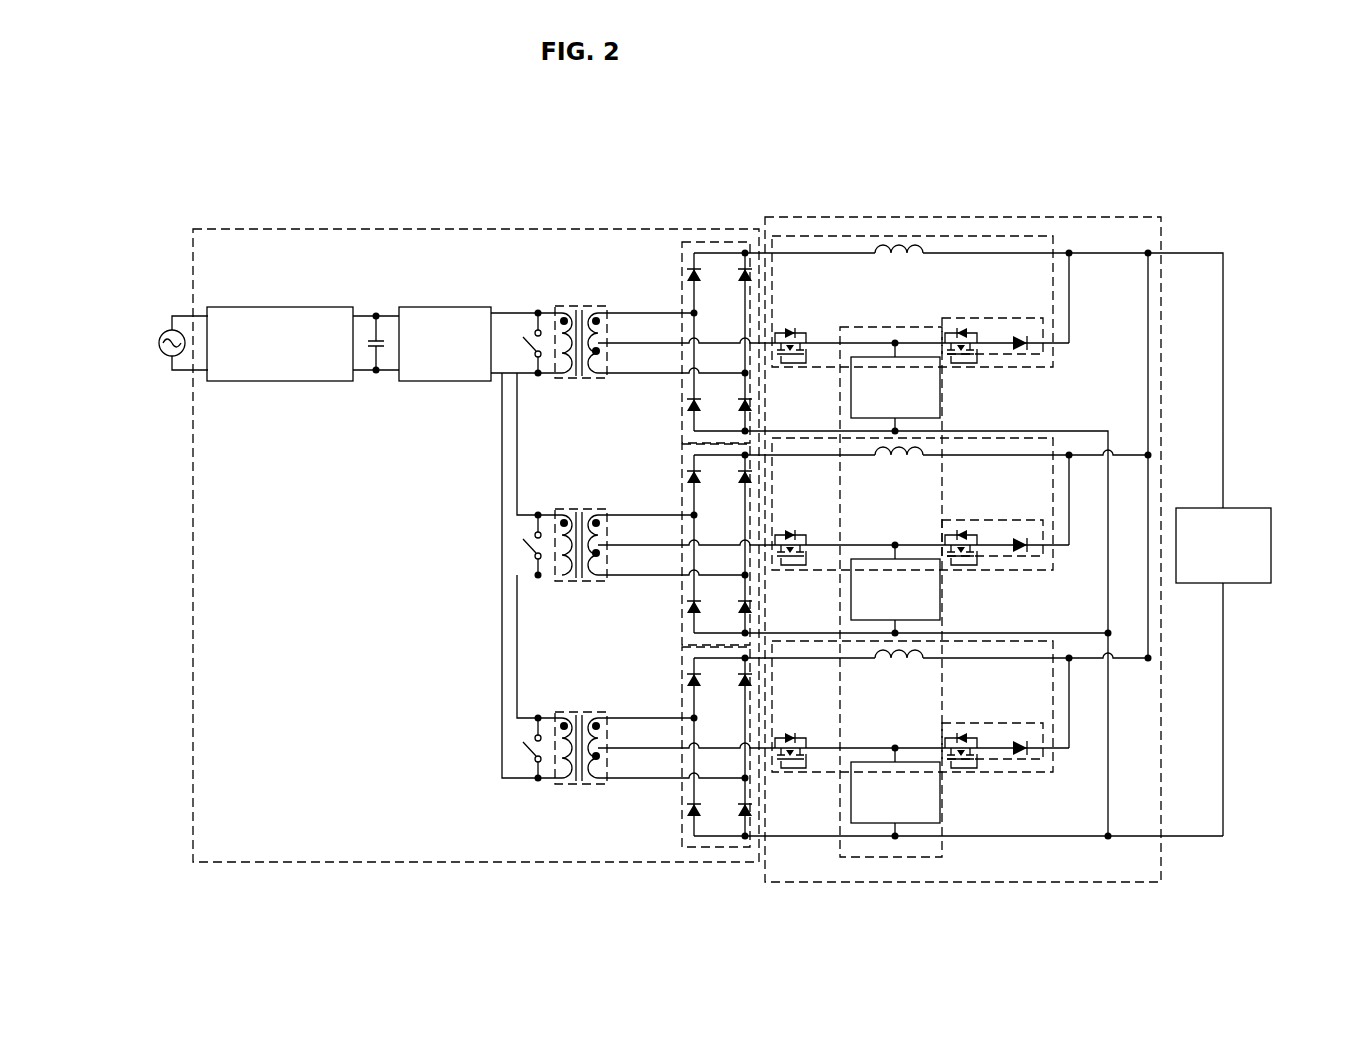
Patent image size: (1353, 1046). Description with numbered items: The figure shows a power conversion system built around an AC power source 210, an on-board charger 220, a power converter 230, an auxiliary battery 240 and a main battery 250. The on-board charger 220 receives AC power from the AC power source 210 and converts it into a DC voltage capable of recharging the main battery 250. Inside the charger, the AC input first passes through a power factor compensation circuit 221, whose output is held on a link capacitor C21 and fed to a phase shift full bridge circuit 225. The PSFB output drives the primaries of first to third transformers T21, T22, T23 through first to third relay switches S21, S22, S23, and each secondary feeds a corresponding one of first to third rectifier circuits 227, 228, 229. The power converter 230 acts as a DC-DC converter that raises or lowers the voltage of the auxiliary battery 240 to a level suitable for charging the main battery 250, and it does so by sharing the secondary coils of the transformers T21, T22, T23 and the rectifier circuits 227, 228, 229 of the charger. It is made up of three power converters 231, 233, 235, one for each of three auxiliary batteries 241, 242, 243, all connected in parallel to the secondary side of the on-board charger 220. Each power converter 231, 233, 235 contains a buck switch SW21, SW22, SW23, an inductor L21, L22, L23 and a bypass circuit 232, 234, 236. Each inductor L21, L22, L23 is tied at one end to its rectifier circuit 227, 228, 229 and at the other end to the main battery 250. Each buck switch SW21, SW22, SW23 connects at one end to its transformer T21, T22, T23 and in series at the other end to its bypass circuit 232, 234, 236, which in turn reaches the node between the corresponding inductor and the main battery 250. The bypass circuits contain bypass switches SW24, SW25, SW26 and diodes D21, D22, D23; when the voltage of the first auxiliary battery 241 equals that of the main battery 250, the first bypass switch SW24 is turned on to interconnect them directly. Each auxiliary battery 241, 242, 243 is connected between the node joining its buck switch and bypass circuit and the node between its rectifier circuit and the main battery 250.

The AC power source 210 is at (162, 328).
The on-board charger 220 is at (500, 229).
The power factor compensation circuit 221 is at (307, 306).
The phase shift full bridge (PSFB) circuit 225 is at (446, 306).
The first rectifier circuit 227 is at (682, 275).
The second rectifier circuit 228 is at (682, 485).
The third rectifier circuit 229 is at (682, 679).
The power converter 230 is at (952, 217).
The first power converter 231 is at (1016, 236).
The first bypass circuit 232 is at (1029, 331).
The second power converter 233 is at (1040, 438).
The second bypass circuit 234 is at (994, 517).
The third power converter 235 is at (1040, 641).
The third bypass circuit 236 is at (1004, 761).
The auxiliary battery 240 is at (861, 327).
The first auxiliary battery 241 is at (940, 388).
The second auxiliary battery 242 is at (940, 597).
The third auxiliary battery 243 is at (940, 800).
The main battery 250 is at (1262, 508).
The link capacitor C21 is at (377, 341).
The first transformer T21 is at (583, 306).
The second transformer T22 is at (581, 509).
The third transformer T23 is at (584, 712).
The first relay switch S21 is at (541, 356).
The second relay switch S22 is at (541, 558).
The third relay switch S23 is at (541, 761).
The first buck switch SW21 is at (800, 335).
The second buck switch SW22 is at (800, 537).
The third buck switch SW23 is at (800, 740).
The first bypass switch SW24 is at (970, 331).
The second bypass switch SW25 is at (970, 533).
The third bypass switch SW26 is at (970, 736).
The first bypass diode D21 is at (1017, 333).
The second bypass diode D22 is at (1017, 535).
The third bypass diode D23 is at (1017, 738).
The first inductor L21 is at (899, 261).
The second inductor L22 is at (899, 463).
The third inductor L23 is at (899, 665).